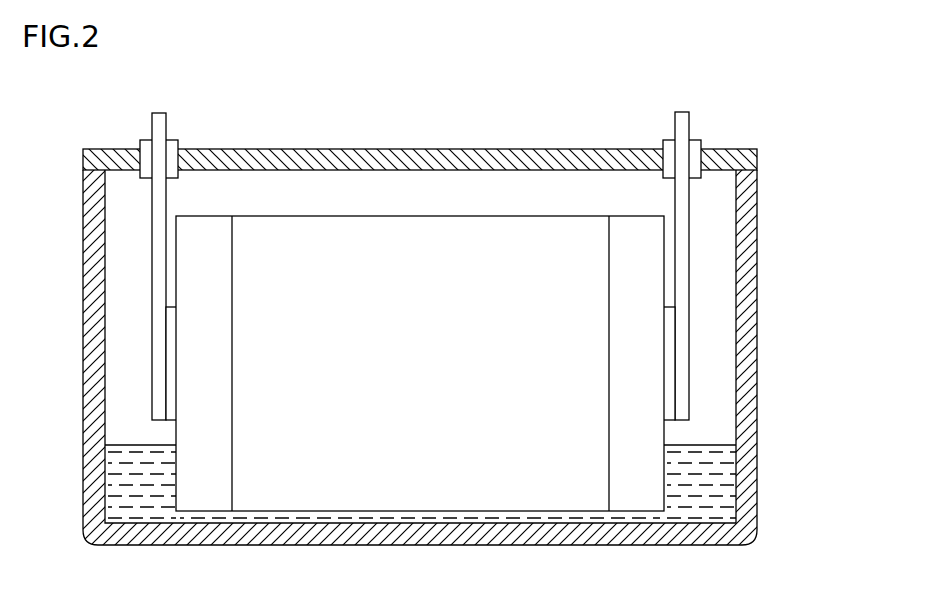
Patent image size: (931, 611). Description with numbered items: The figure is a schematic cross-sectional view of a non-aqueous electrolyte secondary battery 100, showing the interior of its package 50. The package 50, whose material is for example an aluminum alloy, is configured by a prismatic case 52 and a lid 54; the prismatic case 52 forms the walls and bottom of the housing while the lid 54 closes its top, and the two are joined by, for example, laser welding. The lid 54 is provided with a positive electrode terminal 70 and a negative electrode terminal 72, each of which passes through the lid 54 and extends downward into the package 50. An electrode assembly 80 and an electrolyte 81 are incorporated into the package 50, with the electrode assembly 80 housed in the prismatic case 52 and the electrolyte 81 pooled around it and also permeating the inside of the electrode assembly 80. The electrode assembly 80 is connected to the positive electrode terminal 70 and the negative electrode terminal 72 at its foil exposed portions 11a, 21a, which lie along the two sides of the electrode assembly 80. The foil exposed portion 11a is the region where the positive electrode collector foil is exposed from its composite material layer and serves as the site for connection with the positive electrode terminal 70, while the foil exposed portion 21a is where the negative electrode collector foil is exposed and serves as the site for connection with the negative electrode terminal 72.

The non-aqueous electrolyte secondary battery 100 is at (476, 298).
The package 50 is at (474, 346).
The prismatic case 52 is at (747, 215).
The lid 54 is at (728, 157).
The positive electrode terminal 70 is at (157, 112).
The negative electrode terminal 72 is at (681, 111).
The electrode assembly 80 is at (421, 348).
The foil exposed portion 11a is at (202, 495).
The foil exposed portion 21a is at (636, 495).
The electrolyte 81 is at (702, 493).